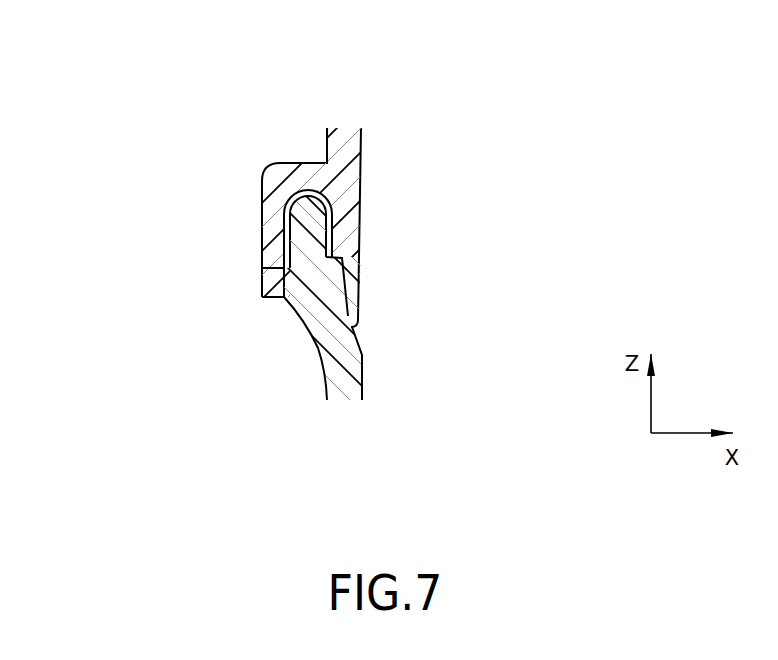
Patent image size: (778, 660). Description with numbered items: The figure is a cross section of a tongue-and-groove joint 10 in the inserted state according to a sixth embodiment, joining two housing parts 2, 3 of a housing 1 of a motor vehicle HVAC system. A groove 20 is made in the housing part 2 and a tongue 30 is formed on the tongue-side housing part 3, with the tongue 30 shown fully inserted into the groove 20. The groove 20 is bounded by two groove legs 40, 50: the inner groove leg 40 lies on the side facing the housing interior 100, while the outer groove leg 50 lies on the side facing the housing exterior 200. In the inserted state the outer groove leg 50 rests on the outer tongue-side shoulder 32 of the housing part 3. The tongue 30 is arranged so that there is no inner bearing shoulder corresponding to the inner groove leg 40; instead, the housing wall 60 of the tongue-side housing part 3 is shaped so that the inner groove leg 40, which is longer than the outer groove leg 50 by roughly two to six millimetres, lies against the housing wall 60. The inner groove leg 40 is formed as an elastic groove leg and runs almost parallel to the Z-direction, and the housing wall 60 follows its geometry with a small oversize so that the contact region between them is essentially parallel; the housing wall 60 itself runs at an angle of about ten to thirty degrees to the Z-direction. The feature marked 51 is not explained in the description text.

The housing 1 is at (112, 73).
The housing part 2 is at (343, 108).
The housing part 3 is at (343, 424).
The tongue-and-groove joint 10 is at (465, 247).
The groove 20 is at (297, 153).
The tongue 30 is at (310, 243).
The outer tongue-side shoulder 32 is at (272, 282).
The inner groove leg 40 is at (365, 263).
The outer groove leg 50 is at (255, 213).
The slot 51 is at (273, 258).
The housing wall 60 is at (341, 372).
The housing interior 100 is at (620, 287).
The housing exterior 200 is at (18, 281).